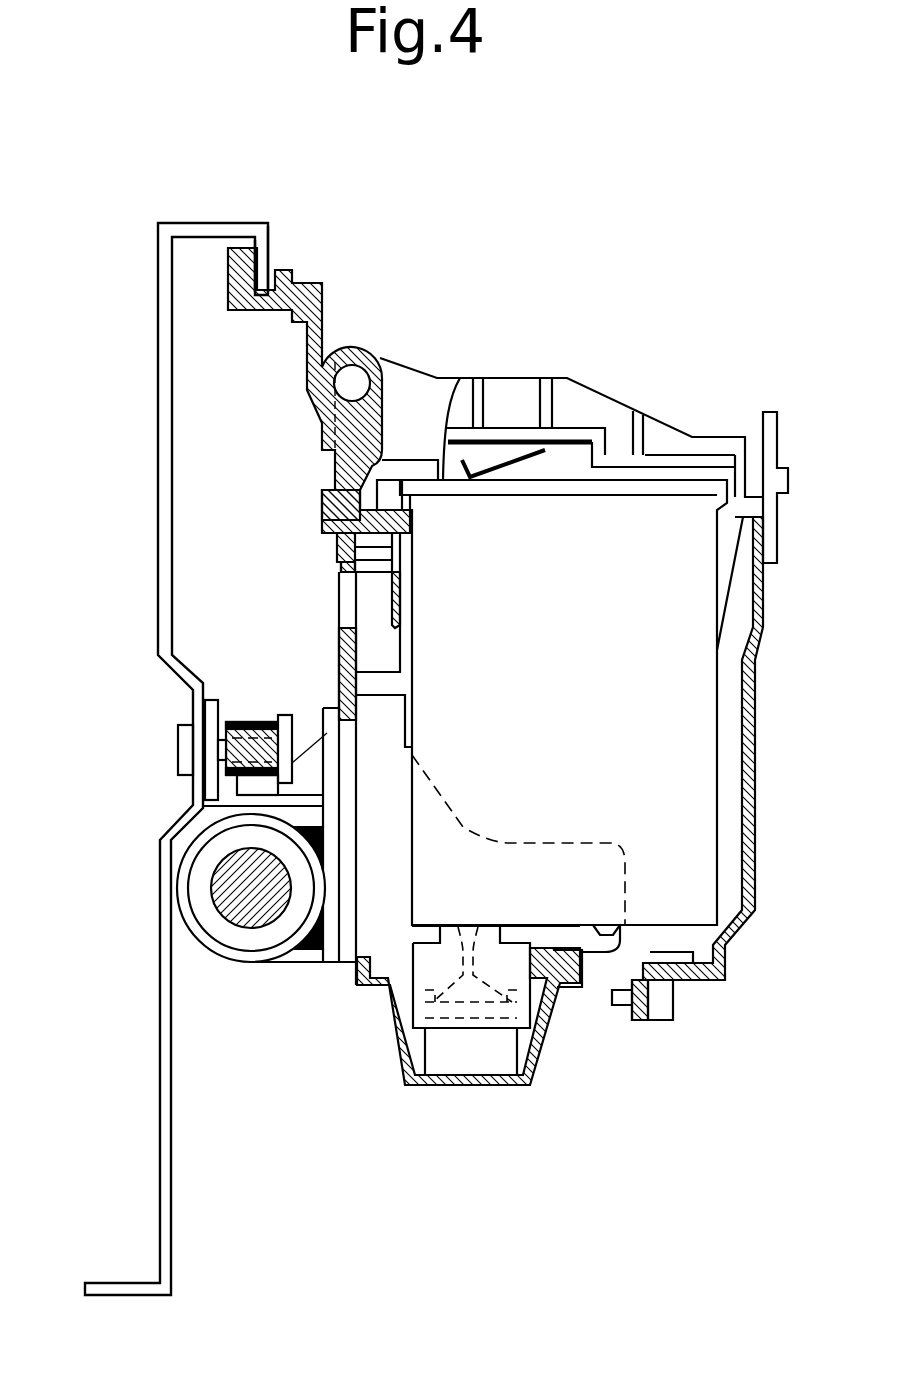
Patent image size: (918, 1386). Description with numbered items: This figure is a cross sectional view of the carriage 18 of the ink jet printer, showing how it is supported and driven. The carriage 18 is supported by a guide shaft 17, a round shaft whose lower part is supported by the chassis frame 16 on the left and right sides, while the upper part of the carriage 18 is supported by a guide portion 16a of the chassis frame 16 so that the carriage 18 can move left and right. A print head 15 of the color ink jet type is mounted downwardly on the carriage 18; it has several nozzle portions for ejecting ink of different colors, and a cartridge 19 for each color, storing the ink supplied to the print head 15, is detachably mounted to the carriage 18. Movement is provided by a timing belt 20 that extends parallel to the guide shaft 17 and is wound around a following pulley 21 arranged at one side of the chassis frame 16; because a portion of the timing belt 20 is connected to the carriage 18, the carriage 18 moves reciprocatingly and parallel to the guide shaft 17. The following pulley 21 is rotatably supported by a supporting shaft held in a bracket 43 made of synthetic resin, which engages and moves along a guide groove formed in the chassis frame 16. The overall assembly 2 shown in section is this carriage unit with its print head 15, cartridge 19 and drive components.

The cartridge holder frame 2 is at (354, 1076).
The print head 15 is at (480, 1053).
The chassis frame 16 is at (155, 480).
The guide portion 16a is at (270, 261).
The guide shaft 17 is at (226, 893).
The carriage 18 is at (337, 560).
The cartridge 19 is at (645, 535).
The timing belt 20 is at (262, 720).
The following pulley 21 is at (250, 757).
The bracket 43 is at (212, 722).